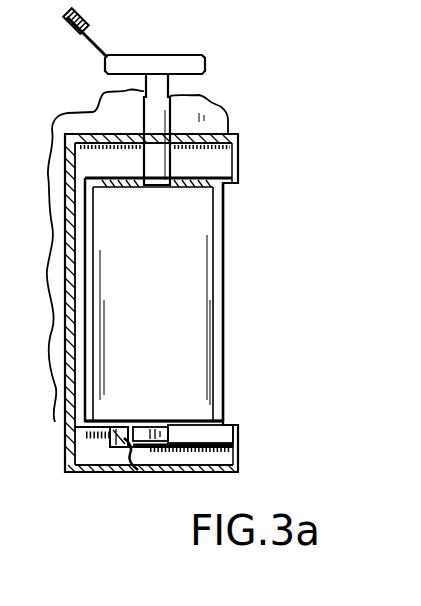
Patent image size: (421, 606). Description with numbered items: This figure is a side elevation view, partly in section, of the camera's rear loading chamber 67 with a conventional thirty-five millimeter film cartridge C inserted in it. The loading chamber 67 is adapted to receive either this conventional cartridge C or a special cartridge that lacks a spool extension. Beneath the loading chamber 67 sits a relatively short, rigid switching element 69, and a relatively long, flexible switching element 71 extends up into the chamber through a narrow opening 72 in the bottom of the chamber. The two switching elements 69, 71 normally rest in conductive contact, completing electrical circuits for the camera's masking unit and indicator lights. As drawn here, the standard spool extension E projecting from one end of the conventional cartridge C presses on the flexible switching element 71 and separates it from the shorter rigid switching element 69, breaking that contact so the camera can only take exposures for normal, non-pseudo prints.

The rear loading chamber 67 is at (223, 212).
The conventional 35 mm film cartridge C is at (182, 281).
The narrow opening 72 is at (137, 427).
The spool extension E is at (155, 425).
The rigid switching element 69 is at (155, 457).
The flexible switching element 71 is at (128, 450).